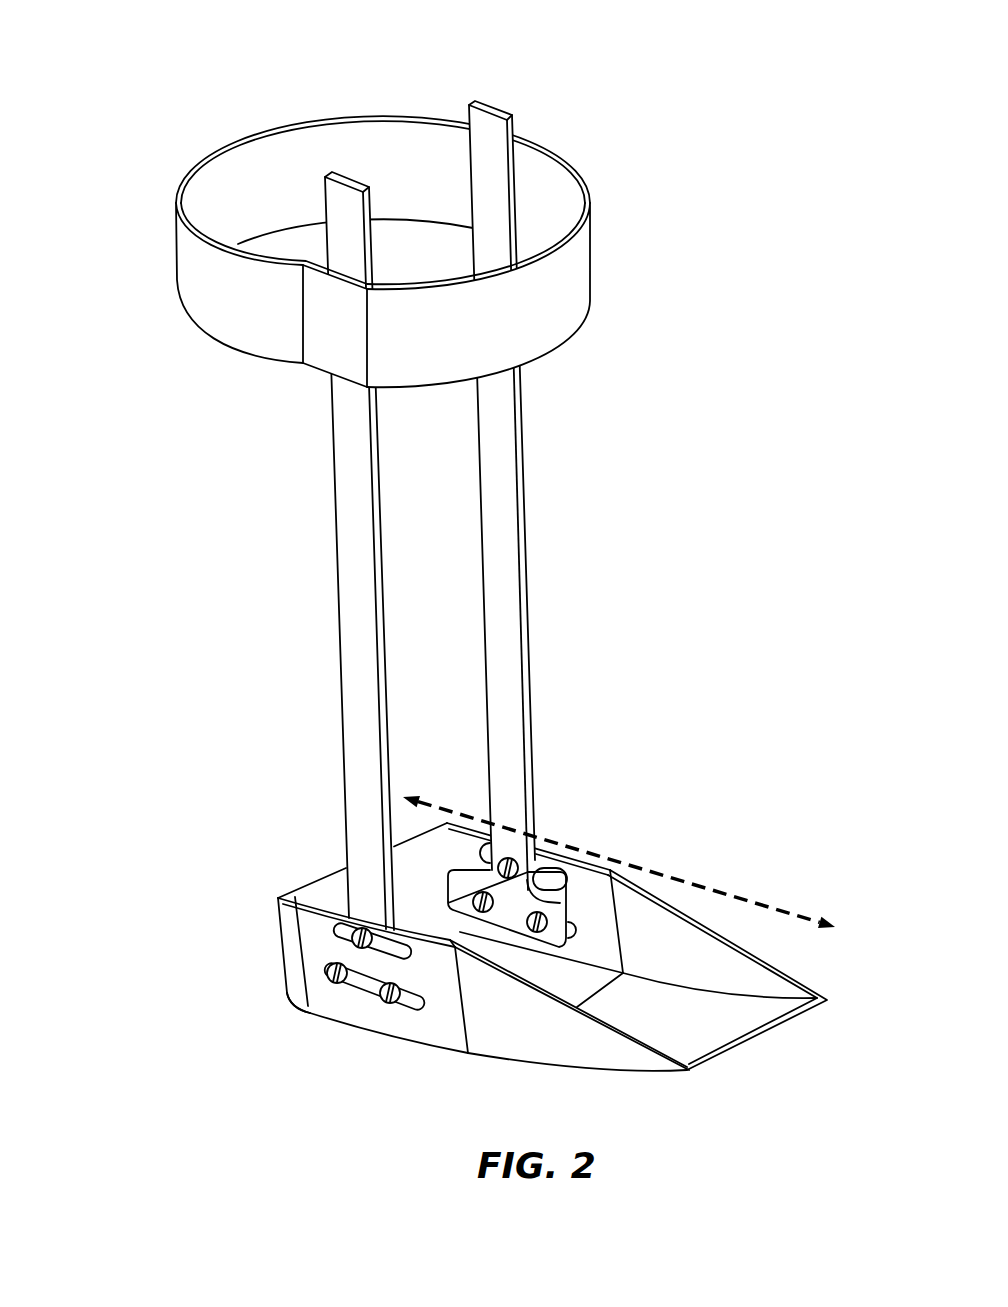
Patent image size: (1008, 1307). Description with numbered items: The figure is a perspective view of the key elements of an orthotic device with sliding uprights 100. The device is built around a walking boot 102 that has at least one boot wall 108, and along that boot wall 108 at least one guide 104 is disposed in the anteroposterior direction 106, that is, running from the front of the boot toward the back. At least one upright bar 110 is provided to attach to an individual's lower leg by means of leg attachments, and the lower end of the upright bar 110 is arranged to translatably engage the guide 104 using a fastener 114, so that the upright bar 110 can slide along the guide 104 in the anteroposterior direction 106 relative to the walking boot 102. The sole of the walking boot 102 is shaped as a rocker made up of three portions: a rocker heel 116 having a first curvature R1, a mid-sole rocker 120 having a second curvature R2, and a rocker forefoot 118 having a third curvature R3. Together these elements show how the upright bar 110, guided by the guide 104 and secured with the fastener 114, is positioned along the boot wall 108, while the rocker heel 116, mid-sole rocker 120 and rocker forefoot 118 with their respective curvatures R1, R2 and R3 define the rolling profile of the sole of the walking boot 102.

The orthotic device with sliding uprights 100 is at (447, 572).
The walking boot 102 is at (478, 927).
The guide 104 is at (516, 833).
The anteroposterior direction 106 is at (707, 885).
The boot wall 108 is at (593, 867).
The upright bar 110 is at (342, 683).
The fastener 114 is at (507, 858).
The rocker heel 116 is at (291, 997).
The rocker forefoot 118 is at (620, 1070).
The mid-sole rocker 120 is at (437, 1047).
The first curvature R1 is at (286, 1031).
The second curvature R2 is at (365, 1053).
The third curvature R3 is at (531, 1082).